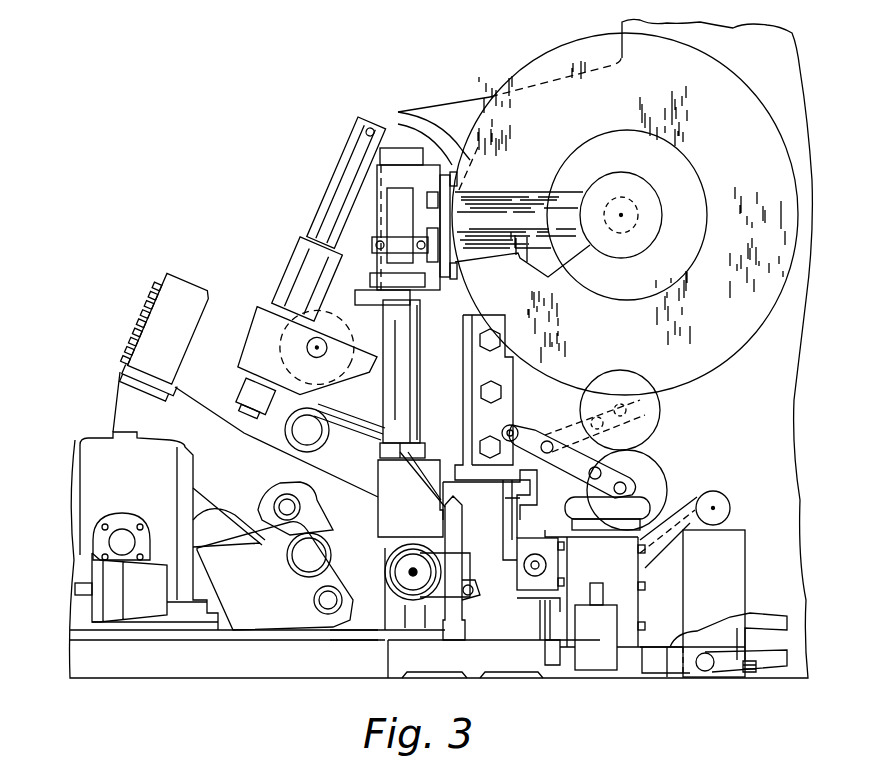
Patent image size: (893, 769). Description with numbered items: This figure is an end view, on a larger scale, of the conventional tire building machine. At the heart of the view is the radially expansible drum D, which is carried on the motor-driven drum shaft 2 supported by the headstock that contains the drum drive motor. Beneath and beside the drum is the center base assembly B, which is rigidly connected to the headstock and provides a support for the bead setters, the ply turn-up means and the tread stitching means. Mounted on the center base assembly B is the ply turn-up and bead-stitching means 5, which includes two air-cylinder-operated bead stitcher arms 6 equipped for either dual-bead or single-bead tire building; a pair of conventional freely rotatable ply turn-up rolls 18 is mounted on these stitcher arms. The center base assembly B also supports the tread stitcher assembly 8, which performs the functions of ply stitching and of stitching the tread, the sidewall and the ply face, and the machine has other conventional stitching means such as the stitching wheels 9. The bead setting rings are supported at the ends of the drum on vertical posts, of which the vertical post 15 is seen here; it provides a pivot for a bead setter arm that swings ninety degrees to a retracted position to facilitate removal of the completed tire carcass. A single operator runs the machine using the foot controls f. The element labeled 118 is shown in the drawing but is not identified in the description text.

The drum shaft 2 is at (624, 212).
The ply turn-up and bead-stitching means 5 is at (272, 281).
The bead stitcher arm 6 is at (338, 193).
The tread stitcher assembly 8 is at (692, 462).
The stitching wheels 9 is at (612, 368).
The vertical post 15 is at (405, 393).
The ply turn-up rolls 18 is at (446, 100).
The cassette 118 is at (130, 357).
The center base assembly B is at (110, 414).
The radially expansible drum D is at (527, 58).
The foot controls f is at (776, 623).